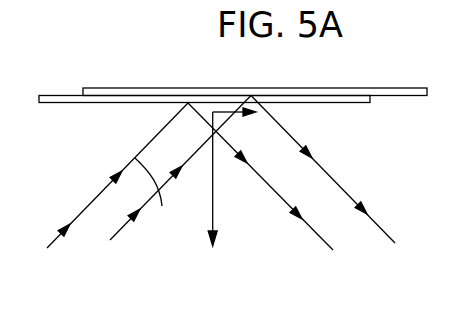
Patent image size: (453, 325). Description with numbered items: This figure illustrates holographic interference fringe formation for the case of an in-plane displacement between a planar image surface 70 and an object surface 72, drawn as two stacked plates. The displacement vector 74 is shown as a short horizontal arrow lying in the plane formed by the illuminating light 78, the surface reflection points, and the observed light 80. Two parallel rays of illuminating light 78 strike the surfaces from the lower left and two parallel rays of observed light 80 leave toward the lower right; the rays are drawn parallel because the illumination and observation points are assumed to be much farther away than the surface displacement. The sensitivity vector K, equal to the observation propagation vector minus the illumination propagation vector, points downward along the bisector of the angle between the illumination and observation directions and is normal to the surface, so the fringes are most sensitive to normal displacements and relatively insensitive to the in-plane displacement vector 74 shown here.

The planar image surface 70 is at (386, 88).
The object surface 72 is at (357, 103).
The displacement vector 74 is at (238, 117).
The illuminating light 78 is at (149, 172).
The observed light 80 is at (342, 188).
The sensitivity vector K is at (219, 179).